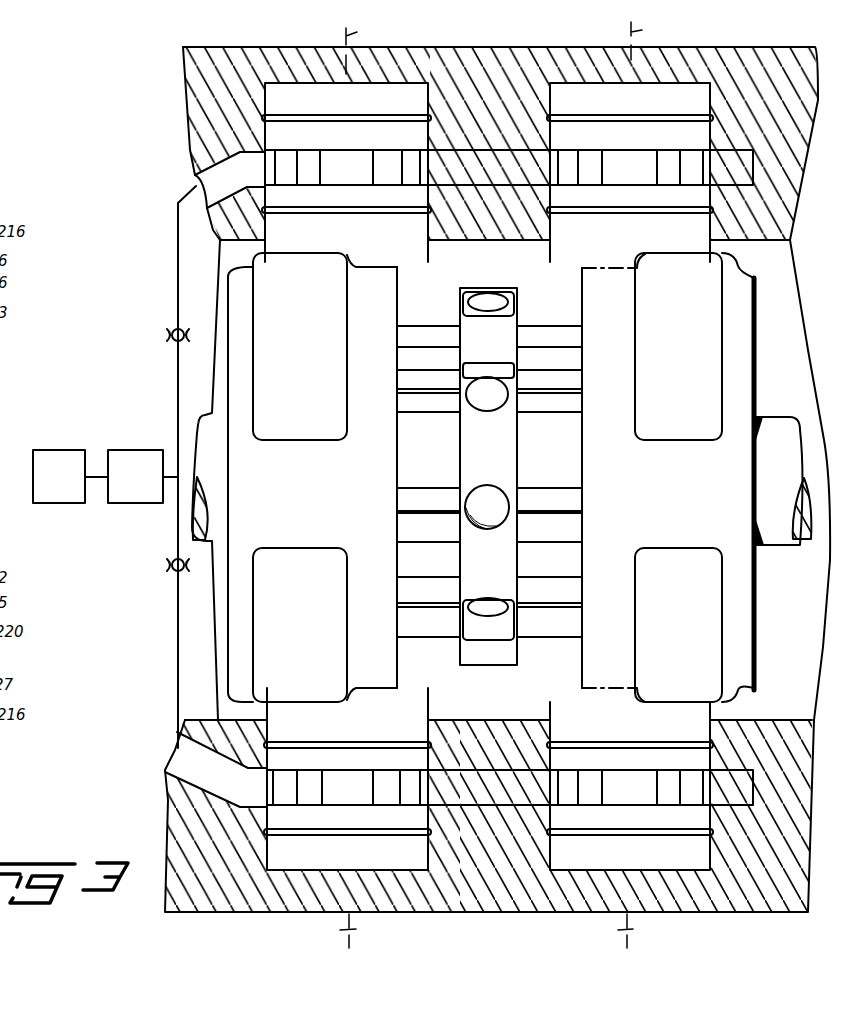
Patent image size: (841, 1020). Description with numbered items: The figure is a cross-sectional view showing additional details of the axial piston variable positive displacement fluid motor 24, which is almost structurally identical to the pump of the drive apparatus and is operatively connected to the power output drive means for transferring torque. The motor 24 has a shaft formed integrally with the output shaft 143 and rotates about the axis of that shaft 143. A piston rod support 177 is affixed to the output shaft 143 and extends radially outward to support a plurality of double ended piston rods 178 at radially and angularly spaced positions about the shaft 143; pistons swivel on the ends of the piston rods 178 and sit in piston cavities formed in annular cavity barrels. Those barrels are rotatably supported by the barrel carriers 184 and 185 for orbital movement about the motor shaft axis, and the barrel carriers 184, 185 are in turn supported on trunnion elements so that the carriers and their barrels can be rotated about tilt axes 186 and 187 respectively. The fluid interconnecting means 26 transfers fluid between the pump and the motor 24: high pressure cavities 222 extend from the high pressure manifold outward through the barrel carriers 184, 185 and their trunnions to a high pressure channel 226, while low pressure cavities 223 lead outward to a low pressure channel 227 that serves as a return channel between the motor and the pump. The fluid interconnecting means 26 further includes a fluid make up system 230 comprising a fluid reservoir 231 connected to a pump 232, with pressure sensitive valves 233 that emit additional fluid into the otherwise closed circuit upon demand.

The axial piston variable positive displacement fluid motor 24 is at (755, 369).
The fluid interconnecting means 26 is at (218, 163).
The output shaft 143 is at (757, 508).
The piston rod support 177 is at (508, 447).
The double ended piston rods 178 is at (418, 408).
The barrel carrier 184 is at (312, 477).
The barrel carrier 185 is at (668, 477).
The tilt axis 186 is at (342, 488).
The tilt axis 187 is at (627, 485).
The high pressure cavities 222 is at (345, 182).
The low pressure cavities 223 is at (357, 797).
The high pressure channel 226 is at (201, 179).
The low pressure channel 227 is at (170, 775).
The fluid make up system 230 is at (127, 518).
The fluid reservoir 231 is at (50, 453).
The pump 232 is at (123, 453).
The pressure sensitive valves 233 is at (172, 338).